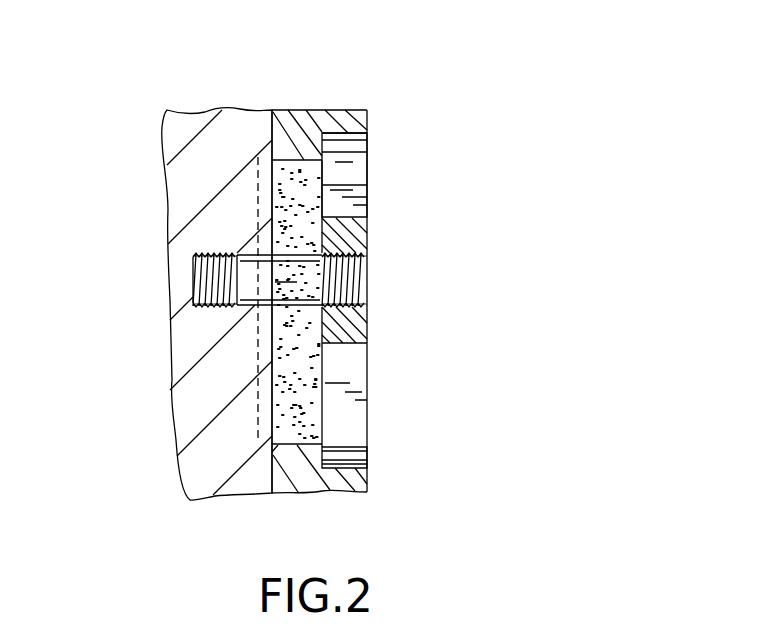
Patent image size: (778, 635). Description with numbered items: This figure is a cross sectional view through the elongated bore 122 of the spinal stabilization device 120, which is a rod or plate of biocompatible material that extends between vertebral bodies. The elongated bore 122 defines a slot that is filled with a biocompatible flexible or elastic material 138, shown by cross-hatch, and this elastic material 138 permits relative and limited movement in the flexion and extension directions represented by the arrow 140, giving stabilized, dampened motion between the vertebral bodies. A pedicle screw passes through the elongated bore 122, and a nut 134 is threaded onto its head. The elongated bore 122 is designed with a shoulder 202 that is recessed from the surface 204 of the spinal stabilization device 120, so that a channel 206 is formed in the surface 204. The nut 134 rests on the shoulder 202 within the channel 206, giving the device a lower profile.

The spinal stabilization device 120 is at (298, 128).
The elongated bore 122 is at (257, 433).
The nut 134 is at (350, 345).
The elastic material 138 is at (316, 318).
The arrow 140 is at (275, 202).
The shoulder 202 is at (340, 448).
The surface 204 is at (367, 480).
The channel 206 is at (415, 158).